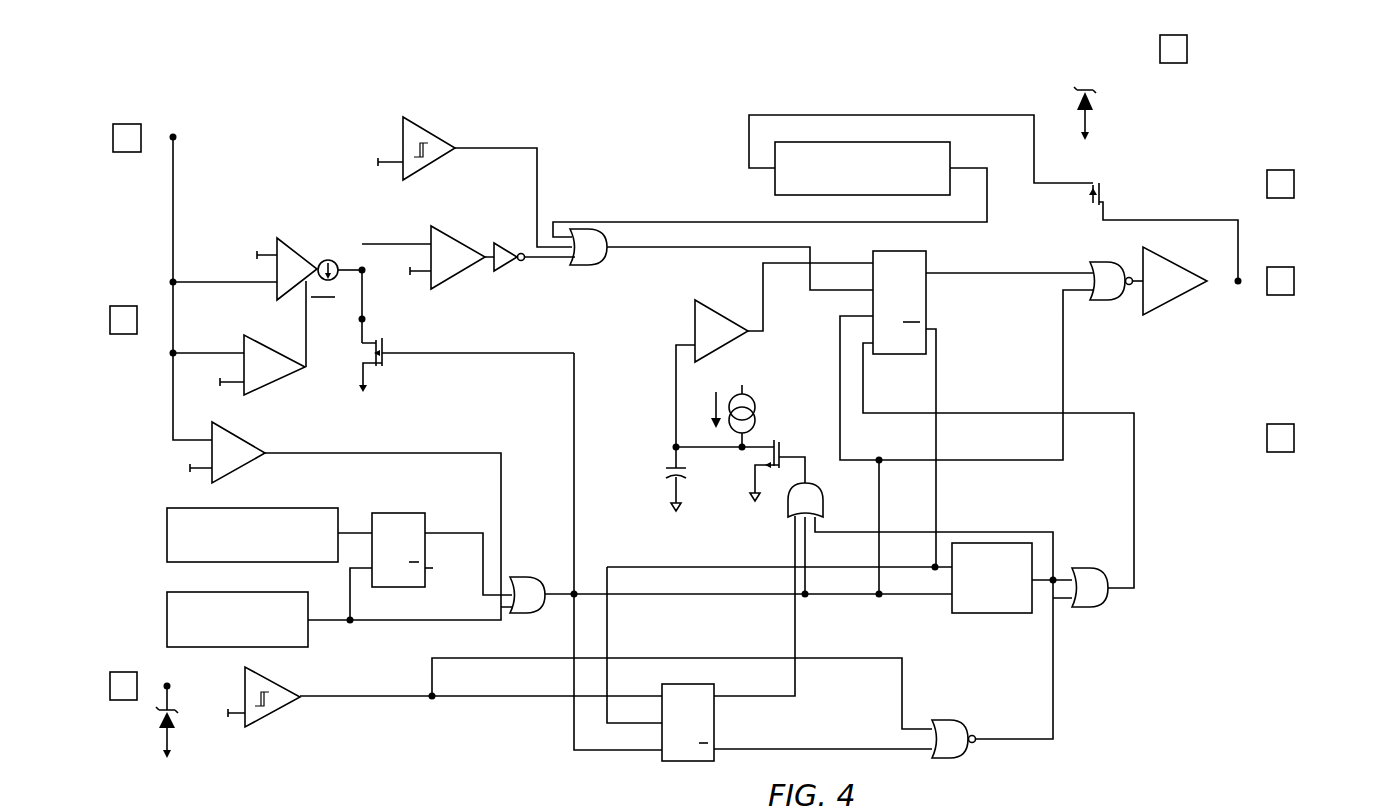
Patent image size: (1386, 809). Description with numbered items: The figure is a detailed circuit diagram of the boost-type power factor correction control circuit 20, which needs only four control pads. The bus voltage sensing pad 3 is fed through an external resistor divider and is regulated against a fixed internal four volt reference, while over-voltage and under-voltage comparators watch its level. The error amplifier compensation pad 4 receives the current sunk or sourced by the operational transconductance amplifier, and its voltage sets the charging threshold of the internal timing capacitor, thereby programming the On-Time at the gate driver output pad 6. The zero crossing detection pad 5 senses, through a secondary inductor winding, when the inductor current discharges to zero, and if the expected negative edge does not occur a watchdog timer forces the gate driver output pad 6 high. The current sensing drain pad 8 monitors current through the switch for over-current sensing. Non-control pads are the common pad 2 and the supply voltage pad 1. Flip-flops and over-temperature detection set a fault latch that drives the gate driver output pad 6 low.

The PFC control circuit 20 is at (303, 89).
The VCC pad 1 is at (1085, 88).
The COM pad 2 is at (1173, 63).
The VBUS pad 3 is at (403, 137).
The COMP pad 4 is at (695, 319).
The ZX pad 5 is at (245, 686).
The PFC pad 6 is at (1207, 281).
The DRAIN pad 8 is at (1099, 184).